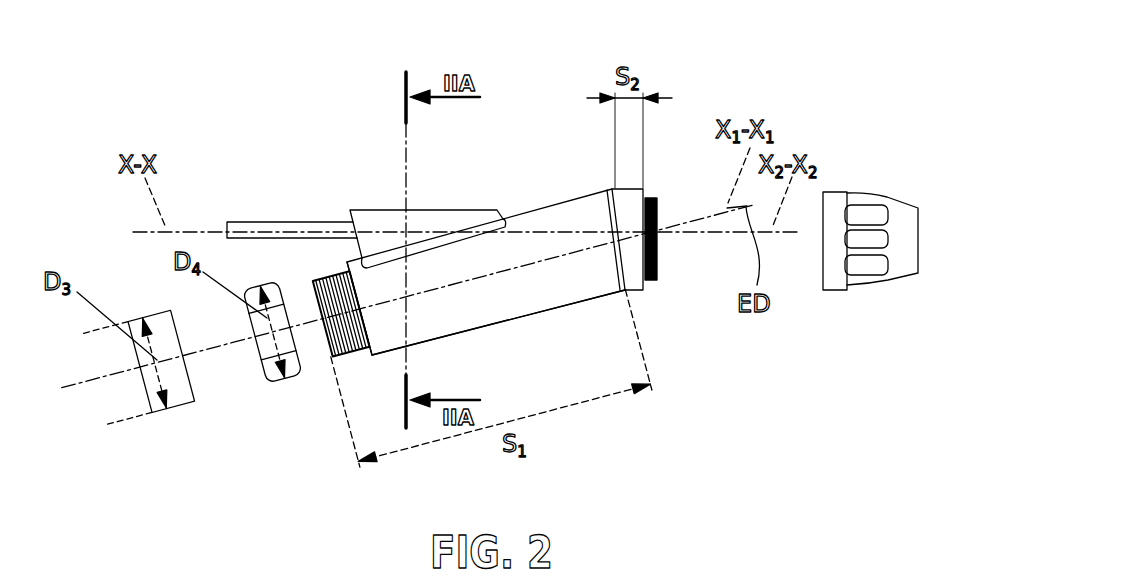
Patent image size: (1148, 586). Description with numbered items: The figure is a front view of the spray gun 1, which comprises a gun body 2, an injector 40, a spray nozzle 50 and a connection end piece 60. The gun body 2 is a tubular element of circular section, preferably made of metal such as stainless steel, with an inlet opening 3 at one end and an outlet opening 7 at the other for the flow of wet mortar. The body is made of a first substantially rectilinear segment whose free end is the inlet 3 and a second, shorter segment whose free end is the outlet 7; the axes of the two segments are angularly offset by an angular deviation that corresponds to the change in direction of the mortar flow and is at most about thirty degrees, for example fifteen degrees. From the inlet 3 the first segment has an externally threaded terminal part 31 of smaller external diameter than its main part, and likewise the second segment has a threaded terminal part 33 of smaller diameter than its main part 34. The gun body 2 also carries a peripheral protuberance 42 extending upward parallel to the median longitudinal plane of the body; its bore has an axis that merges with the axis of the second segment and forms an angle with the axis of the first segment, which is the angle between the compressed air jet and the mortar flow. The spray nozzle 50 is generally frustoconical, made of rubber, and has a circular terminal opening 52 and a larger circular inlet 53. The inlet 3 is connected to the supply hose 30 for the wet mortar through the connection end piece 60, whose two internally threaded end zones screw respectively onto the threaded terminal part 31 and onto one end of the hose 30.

The spray gun 1 is at (710, 95).
The gun body 2 is at (532, 212).
The inlet opening 3 is at (323, 350).
The outlet opening 7 is at (657, 213).
The supply hose 30 is at (153, 400).
The threaded terminal part 31 is at (350, 357).
The threaded terminal part 33 is at (648, 282).
The main part 34 is at (637, 188).
The injector 40 is at (287, 222).
The peripheral protuberance 42 is at (378, 220).
The spray nozzle 50 is at (872, 303).
The terminal opening 52 is at (920, 225).
The inlet 53 is at (823, 270).
The connection end piece 60 is at (270, 373).